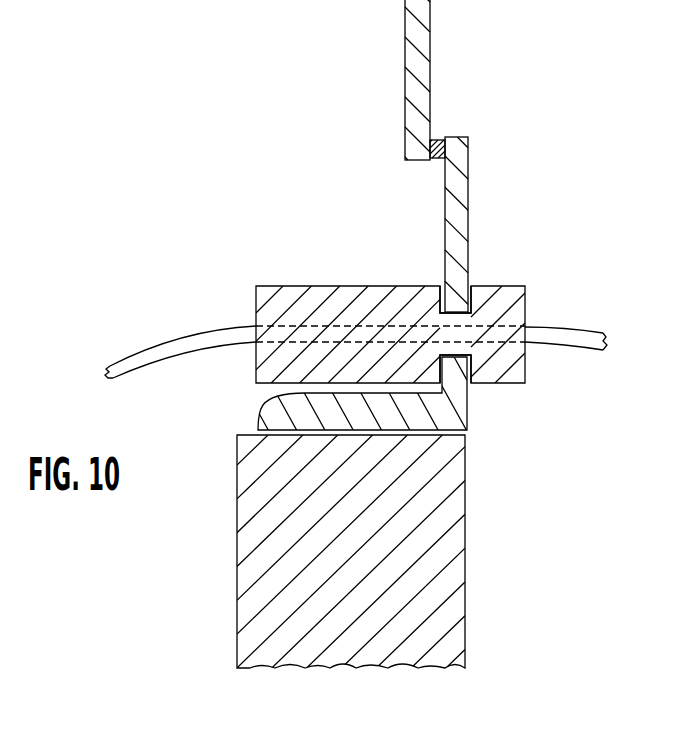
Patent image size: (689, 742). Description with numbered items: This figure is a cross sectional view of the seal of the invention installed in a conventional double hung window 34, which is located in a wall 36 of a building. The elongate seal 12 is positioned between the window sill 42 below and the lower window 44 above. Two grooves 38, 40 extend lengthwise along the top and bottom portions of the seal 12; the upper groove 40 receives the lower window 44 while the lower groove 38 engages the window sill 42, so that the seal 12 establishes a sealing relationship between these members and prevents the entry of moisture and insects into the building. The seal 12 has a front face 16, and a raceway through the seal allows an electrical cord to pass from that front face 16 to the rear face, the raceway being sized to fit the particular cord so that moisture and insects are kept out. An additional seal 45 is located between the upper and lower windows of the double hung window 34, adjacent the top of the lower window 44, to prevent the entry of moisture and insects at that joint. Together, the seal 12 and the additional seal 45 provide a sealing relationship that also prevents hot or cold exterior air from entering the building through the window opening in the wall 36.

The double hung window 34 is at (352, 56).
The additional seal 45 is at (440, 144).
The lower window 44 is at (447, 205).
The elongate seal 12 is at (273, 285).
The groove 40 is at (442, 305).
The groove 38 is at (458, 357).
The front face 16 is at (160, 343).
The window sill 42 is at (262, 410).
The wall 36 is at (237, 567).